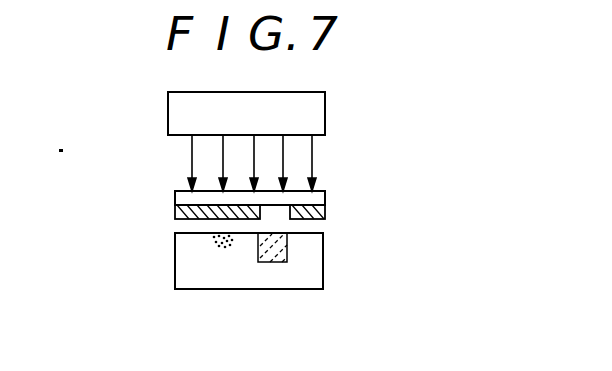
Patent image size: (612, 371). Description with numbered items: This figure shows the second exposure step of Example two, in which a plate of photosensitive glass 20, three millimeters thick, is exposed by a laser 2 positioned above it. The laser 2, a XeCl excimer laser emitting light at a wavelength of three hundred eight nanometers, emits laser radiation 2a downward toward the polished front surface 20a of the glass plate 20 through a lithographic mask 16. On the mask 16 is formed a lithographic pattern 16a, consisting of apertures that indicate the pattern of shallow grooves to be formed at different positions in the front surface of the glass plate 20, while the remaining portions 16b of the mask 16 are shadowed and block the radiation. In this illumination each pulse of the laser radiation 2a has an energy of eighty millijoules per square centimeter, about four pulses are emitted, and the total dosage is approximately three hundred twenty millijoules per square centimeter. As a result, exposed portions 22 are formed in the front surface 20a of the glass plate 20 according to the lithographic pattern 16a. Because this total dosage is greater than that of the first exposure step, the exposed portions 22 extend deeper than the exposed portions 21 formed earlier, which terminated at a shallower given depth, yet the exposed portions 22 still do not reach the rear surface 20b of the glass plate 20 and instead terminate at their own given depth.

The laser 2 is at (325, 105).
The laser radiation 2a is at (312, 163).
The lithographic mask 16 is at (330, 222).
The lithographic pattern 16a is at (278, 213).
The remaining portions 16b is at (323, 208).
The plate of photosensitive glass 20 is at (204, 271).
The front surface 20a is at (183, 228).
The rear surface 20b is at (193, 290).
The exposed portions 21 is at (233, 249).
The exposed portions 22 is at (286, 262).